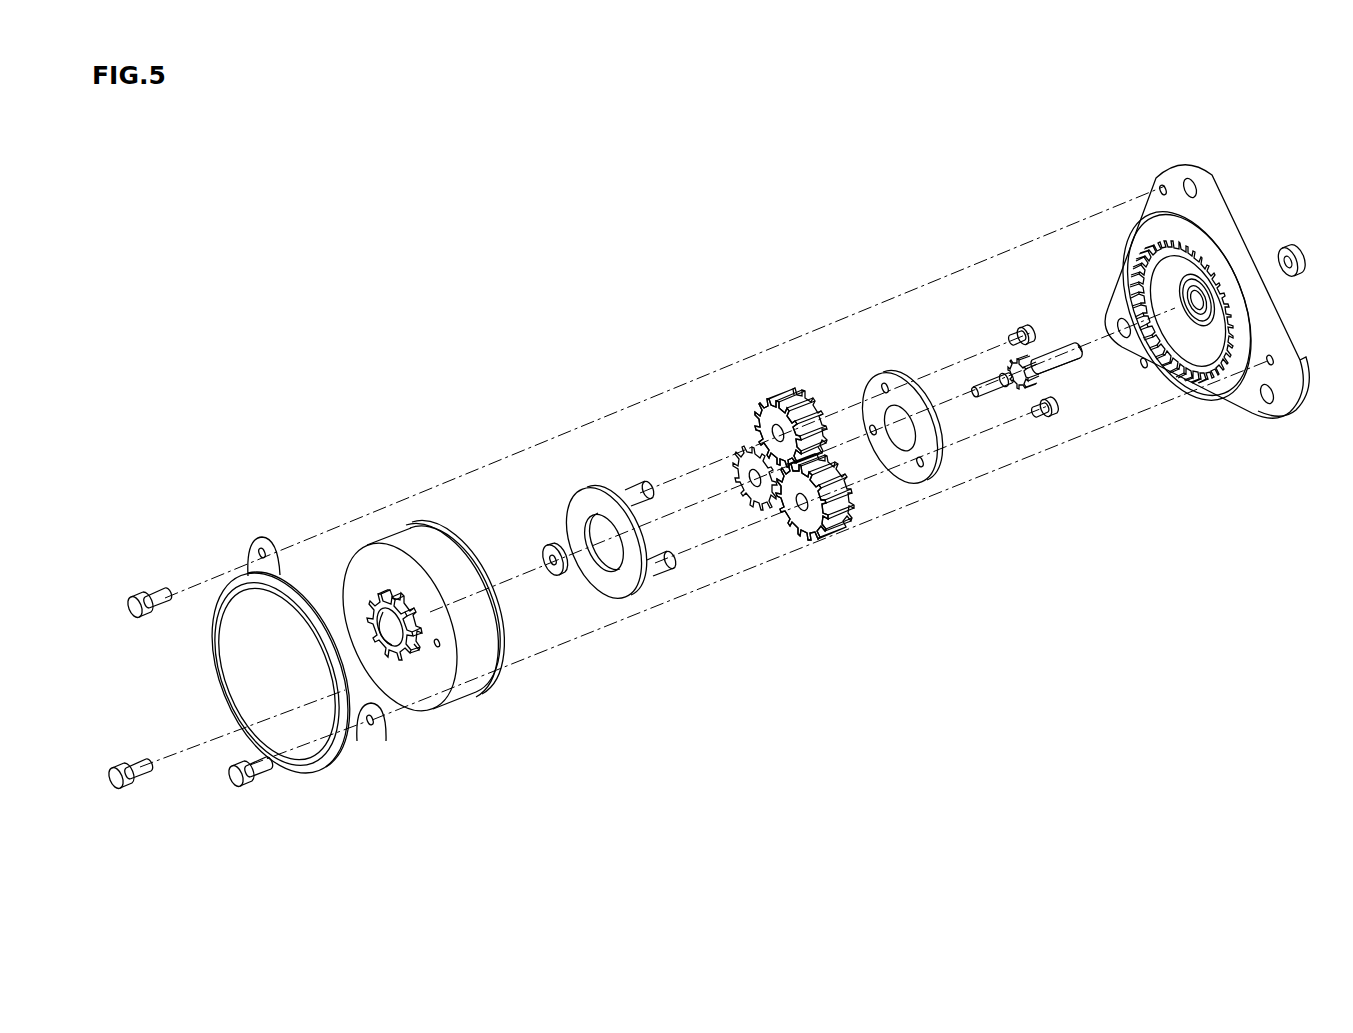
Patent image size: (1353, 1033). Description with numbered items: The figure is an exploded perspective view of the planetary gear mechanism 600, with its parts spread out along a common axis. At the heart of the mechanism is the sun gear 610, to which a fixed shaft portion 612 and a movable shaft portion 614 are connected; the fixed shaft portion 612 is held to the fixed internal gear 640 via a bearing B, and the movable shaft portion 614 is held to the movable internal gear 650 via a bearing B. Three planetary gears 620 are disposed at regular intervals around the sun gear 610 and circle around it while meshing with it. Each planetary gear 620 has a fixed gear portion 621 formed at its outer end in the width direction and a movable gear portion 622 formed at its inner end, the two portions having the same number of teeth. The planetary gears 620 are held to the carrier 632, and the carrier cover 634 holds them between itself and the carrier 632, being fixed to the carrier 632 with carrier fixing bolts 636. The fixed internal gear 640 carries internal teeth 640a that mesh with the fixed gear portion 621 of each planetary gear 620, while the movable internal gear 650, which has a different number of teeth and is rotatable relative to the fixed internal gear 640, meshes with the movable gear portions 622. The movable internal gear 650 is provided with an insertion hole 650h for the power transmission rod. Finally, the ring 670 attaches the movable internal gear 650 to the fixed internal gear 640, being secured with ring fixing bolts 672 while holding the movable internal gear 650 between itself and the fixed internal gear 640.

The planetary gear mechanism 600 is at (631, 278).
The sun gear 610 is at (1036, 364).
The fixed shaft portion 612 is at (1075, 355).
The movable shaft portion 614 is at (991, 393).
The planetary gear 620 is at (760, 276).
The fixed gear portion 621 is at (806, 462).
The movable gear portion 622 is at (772, 396).
The carrier 632 is at (600, 488).
The carrier cover 634 is at (900, 385).
The carrier fixing bolt 636 is at (1028, 330).
The fixed internal gear 640 is at (1172, 168).
The internal teeth 640a is at (1192, 243).
The movable internal gear 650 is at (415, 533).
The insertion hole 650h is at (392, 650).
The ring 670 is at (215, 666).
The ring fixing bolt 672 is at (146, 598).
The bearing B is at (552, 546).